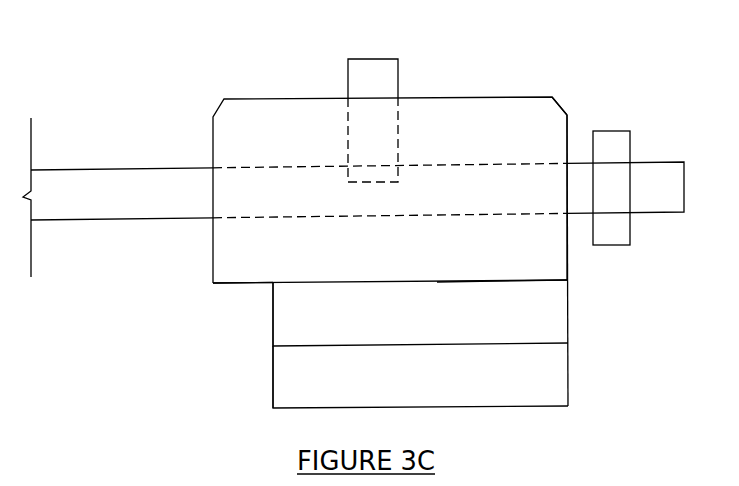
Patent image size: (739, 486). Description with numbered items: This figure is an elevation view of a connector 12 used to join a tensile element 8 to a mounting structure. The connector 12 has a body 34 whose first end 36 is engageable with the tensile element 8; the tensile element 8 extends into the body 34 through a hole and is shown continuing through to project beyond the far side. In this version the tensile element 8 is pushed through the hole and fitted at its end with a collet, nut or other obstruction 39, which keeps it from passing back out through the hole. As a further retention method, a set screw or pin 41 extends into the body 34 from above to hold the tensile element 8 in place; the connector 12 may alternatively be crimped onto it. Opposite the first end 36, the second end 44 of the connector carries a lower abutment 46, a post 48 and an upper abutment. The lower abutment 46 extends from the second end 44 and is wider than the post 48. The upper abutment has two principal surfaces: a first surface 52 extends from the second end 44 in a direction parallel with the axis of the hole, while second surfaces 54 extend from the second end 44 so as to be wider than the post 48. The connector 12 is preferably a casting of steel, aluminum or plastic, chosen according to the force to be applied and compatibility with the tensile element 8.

The tensile element 8 is at (113, 190).
The connector 12 is at (443, 97).
The set screw or pin 41 is at (372, 55).
The first end 36 is at (568, 118).
The obstruction 39 is at (632, 137).
The body 34 is at (569, 262).
The second surfaces 54 is at (437, 282).
The post 48 is at (533, 329).
The lower abutment 46 is at (543, 378).
The first surface 52 is at (230, 283).
The second end 44 is at (273, 363).